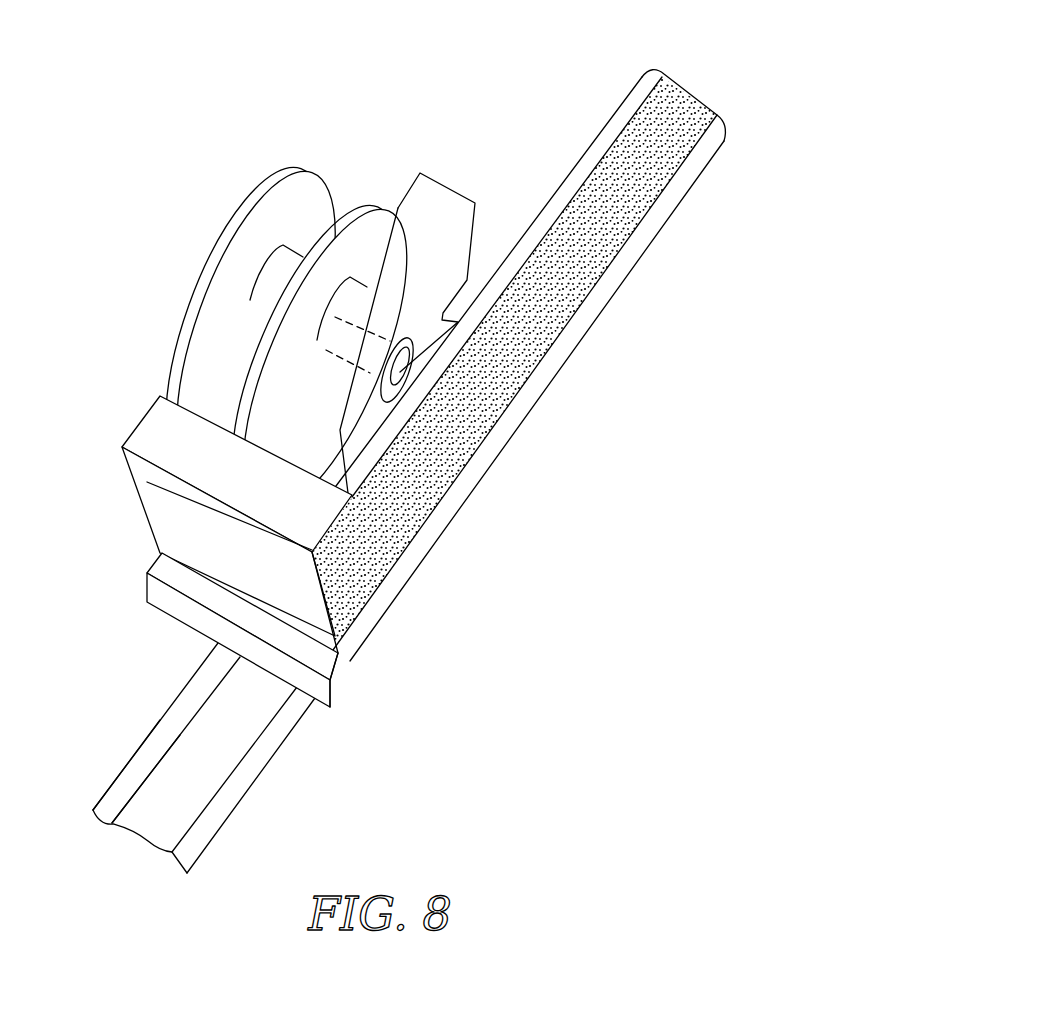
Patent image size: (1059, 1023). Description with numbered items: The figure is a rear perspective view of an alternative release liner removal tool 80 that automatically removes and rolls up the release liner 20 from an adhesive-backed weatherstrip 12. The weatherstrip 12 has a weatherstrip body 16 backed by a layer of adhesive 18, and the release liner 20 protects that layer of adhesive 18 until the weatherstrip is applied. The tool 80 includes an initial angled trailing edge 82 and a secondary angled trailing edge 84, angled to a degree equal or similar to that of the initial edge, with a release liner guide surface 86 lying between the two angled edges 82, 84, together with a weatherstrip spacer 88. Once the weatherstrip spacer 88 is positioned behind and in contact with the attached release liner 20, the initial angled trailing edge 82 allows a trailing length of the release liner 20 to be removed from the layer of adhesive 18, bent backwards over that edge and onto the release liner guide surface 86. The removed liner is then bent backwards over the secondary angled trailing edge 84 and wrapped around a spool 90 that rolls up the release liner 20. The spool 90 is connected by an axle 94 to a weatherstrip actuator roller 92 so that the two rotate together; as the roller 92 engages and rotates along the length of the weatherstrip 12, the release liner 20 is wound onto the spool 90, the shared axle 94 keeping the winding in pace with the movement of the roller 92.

The weatherstrip 12 is at (440, 449).
The weatherstrip body 16 is at (712, 147).
The layer of adhesive 18 is at (683, 100).
The release liner 20 is at (208, 373).
The release liner removal tool 80 is at (263, 418).
The initial angled trailing edge 82 is at (333, 641).
The secondary angled trailing edge 84 is at (130, 467).
The release liner guide surface 86 is at (155, 472).
The weatherstrip spacer 88 is at (329, 665).
The spool 90 is at (278, 210).
The weatherstrip actuator roller 92 is at (430, 343).
The axle 94 is at (327, 327).